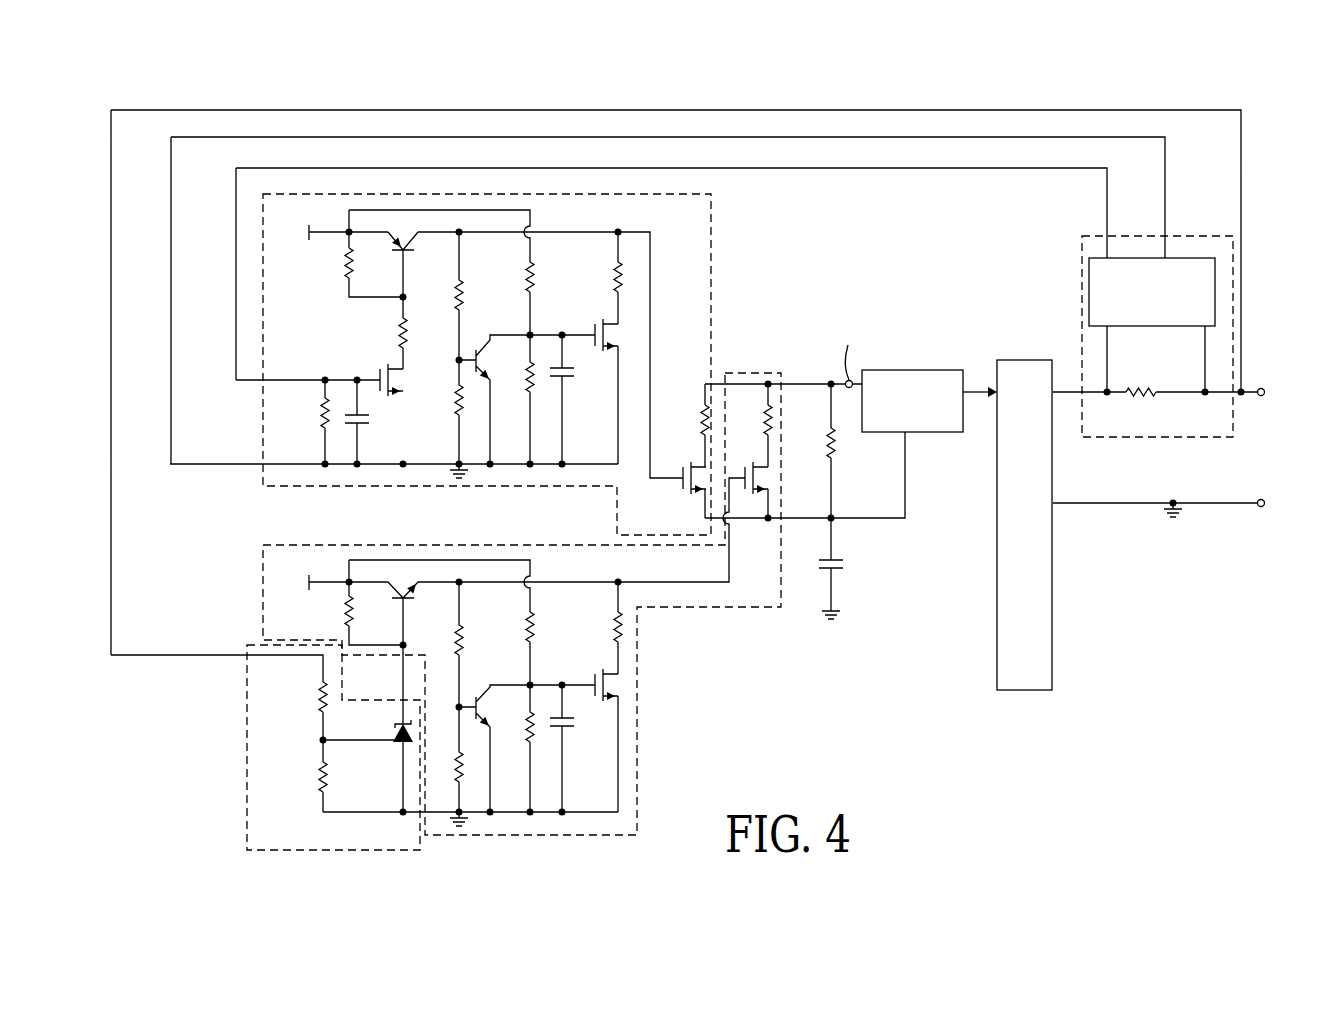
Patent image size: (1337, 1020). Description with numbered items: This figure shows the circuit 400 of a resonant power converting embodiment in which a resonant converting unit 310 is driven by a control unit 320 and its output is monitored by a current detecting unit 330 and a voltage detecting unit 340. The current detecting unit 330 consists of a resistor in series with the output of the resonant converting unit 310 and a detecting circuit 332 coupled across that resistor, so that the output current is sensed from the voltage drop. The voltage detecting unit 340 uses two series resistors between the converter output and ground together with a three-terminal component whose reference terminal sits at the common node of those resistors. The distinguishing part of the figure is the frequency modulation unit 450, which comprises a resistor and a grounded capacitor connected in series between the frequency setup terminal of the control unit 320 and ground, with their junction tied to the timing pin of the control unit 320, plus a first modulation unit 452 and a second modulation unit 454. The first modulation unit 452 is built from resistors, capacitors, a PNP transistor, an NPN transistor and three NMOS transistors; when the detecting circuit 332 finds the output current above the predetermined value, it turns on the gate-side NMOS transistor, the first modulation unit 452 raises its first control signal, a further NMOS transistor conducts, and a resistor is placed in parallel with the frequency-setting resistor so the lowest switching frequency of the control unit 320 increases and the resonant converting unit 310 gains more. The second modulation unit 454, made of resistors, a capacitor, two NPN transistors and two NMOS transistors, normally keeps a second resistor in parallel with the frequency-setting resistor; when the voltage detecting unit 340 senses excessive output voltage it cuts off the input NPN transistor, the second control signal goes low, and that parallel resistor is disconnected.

The resonant converter system 400 is at (1255, 128).
The resonant converting unit 310 is at (1022, 360).
The control unit 320 is at (910, 370).
The current detecting unit 330 is at (1082, 276).
The detecting circuit 332 is at (1197, 258).
The voltage detecting unit 340 is at (247, 782).
The frequency modulation unit 450 is at (838, 297).
The first modulation unit 452 is at (711, 258).
The second modulation unit 454 is at (748, 373).